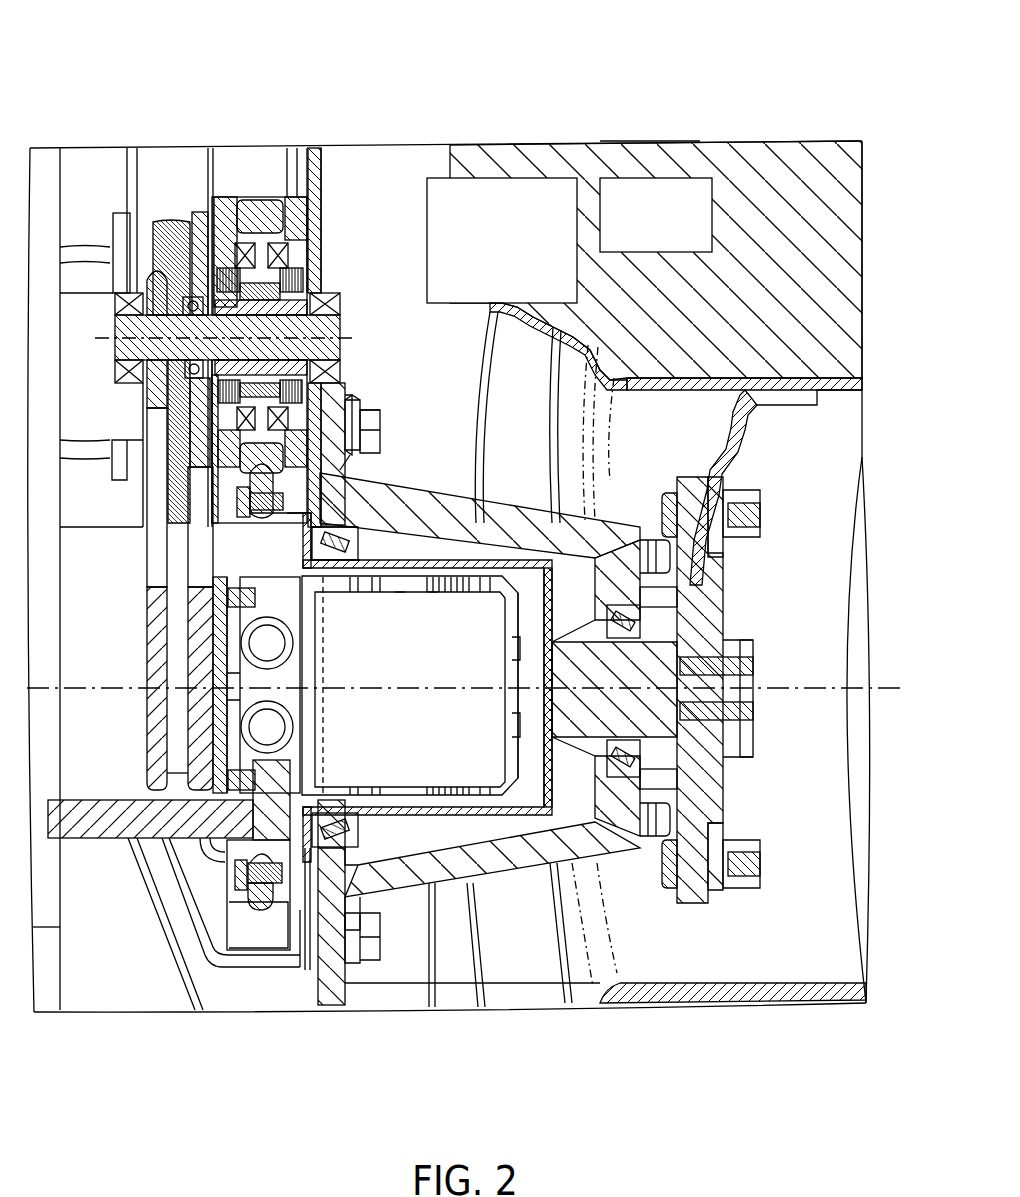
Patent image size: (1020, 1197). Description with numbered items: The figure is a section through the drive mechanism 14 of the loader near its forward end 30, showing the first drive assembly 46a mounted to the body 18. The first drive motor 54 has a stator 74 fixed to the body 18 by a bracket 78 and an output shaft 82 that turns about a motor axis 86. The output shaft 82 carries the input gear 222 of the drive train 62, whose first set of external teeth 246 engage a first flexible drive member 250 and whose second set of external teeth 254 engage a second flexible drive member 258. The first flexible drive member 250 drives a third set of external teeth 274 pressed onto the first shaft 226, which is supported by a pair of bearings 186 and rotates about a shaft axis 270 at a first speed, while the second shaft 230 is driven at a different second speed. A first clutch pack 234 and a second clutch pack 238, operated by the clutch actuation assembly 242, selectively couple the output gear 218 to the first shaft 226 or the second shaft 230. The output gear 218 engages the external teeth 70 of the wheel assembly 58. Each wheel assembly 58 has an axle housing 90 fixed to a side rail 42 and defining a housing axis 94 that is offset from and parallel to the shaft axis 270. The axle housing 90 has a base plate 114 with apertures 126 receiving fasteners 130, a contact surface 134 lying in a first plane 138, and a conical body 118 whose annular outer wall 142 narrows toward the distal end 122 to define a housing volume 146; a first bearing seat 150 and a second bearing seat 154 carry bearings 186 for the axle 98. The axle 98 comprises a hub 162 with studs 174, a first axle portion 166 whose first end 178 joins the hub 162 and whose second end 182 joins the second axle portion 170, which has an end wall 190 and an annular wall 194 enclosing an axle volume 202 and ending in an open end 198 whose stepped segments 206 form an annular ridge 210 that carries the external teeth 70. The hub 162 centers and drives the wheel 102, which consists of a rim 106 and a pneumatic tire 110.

The drive mechanism 14 is at (578, 96).
The body 18 is at (317, 185).
The forward end 30 is at (333, 1010).
The side rails 42 is at (318, 222).
The first drive assembly 46a is at (418, 883).
The first drive motor 54 is at (400, 600).
The wheel assembly 58 is at (363, 503).
The drive train 62 is at (155, 600).
The external teeth 70 is at (260, 900).
The stator 74 is at (433, 600).
The bracket 78 is at (67, 812).
The output shaft 82 is at (237, 687).
The motor axis 86 is at (380, 688).
The axle housing 90 is at (492, 523).
The housing axis 94 is at (63, 698).
The axle 98 is at (582, 655).
The wheel 102 is at (727, 141).
The rim 106 is at (750, 428).
The pneumatic tire 110 is at (642, 141).
The base plate 114 is at (350, 395).
The body 118 is at (403, 490).
The distal end 122 is at (612, 840).
The apertures 126 is at (360, 387).
The fastener 130 is at (400, 390).
The contact surface 134 is at (298, 978).
The first plane 138 is at (325, 755).
The annular outer wall 142 is at (600, 547).
The housing volume 146 is at (491, 868).
The first bearing seat 150 is at (356, 543).
The second bearing seat 154 is at (622, 593).
The hub 162 is at (718, 590).
The first axle portion 166 is at (610, 868).
The second axle portion 170 is at (440, 870).
The studs 174 is at (753, 517).
The first end 178 is at (740, 647).
The second end 182 is at (583, 740).
The bearing 186 is at (640, 640).
The end wall 190 is at (557, 657).
The annular wall 194 is at (527, 863).
The open end 198 is at (310, 553).
The axle volume 202 is at (530, 623).
The stepped segments 206 is at (360, 912).
The annular ridge 210 is at (280, 880).
The output gear 218 is at (305, 248).
The input gear 222 is at (157, 645).
The first shaft 226 is at (130, 347).
The second shaft 230 is at (260, 222).
The first clutch pack 234 is at (220, 290).
The second clutch pack 238 is at (212, 290).
The clutch actuation assembly 242 is at (305, 287).
The first set of external teeth 246 is at (147, 830).
The first flexible drive member 250 is at (157, 560).
The second set of external teeth 254 is at (190, 830).
The second flexible drive member 258 is at (202, 543).
The shaft axis 270 is at (110, 245).
The third set of external teeth 274 is at (147, 382).